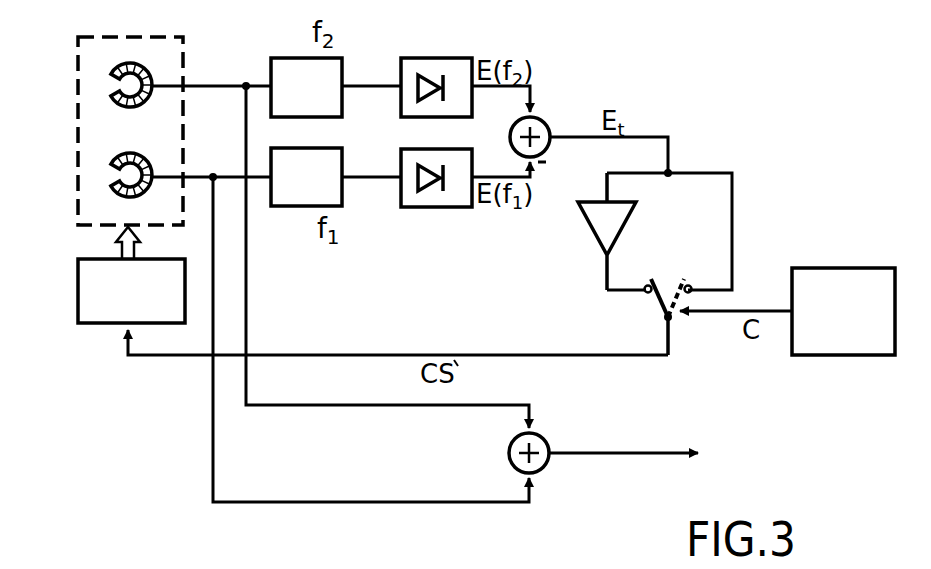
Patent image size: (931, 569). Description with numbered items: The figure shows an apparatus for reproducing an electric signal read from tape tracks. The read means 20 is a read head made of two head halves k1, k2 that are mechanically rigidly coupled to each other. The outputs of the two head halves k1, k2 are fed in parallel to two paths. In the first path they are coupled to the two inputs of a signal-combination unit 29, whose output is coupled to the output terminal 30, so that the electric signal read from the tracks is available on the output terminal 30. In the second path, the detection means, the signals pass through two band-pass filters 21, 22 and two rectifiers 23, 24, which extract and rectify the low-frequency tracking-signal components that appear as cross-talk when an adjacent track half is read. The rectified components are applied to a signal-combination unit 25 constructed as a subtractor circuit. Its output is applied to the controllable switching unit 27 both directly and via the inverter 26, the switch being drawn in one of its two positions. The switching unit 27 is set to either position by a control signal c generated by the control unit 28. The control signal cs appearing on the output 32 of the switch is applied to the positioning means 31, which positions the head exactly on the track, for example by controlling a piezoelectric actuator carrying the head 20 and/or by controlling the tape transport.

The read means 20 is at (148, 35).
The head half k1 is at (110, 74).
The head half k2 is at (110, 164).
The band-pass filter 21 is at (284, 57).
The band-pass filter 22 is at (295, 207).
The rectifier 23 is at (432, 57).
The rectifier 24 is at (434, 208).
The signal-combination unit 25 is at (545, 120).
The inverter 26 is at (634, 219).
The controllable switching unit 27 is at (652, 300).
The control unit 28 is at (862, 356).
The signal-combination unit 29 is at (545, 441).
The output terminal 30 is at (642, 454).
The positioning means 31 is at (78, 292).
The output of the switch 32 is at (673, 320).